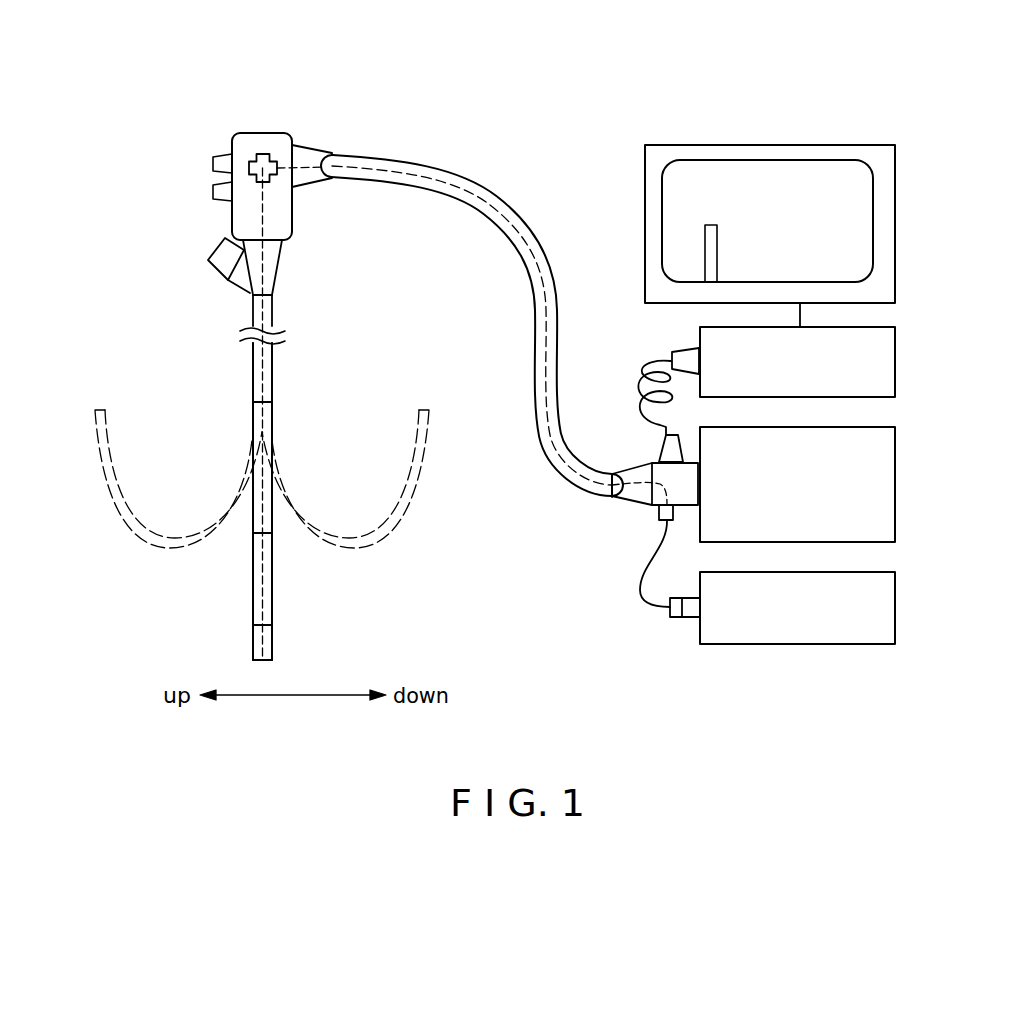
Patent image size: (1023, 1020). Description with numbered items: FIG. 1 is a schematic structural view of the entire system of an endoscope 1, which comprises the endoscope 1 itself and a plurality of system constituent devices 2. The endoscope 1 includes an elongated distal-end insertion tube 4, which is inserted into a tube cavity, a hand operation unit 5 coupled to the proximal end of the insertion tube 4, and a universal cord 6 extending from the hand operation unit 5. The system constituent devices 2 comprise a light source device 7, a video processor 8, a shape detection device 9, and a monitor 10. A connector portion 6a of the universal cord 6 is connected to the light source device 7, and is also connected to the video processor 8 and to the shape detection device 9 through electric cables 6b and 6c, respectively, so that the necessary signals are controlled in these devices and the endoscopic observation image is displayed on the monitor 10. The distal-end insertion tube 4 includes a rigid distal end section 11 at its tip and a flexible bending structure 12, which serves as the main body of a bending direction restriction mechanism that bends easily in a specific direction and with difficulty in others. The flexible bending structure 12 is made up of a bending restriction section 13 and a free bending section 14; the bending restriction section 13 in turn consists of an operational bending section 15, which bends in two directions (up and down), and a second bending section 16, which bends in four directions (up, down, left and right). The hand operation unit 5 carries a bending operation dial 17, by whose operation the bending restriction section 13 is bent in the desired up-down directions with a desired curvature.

The endoscope 1 is at (133, 279).
The system constituent devices 2 is at (955, 143).
The distal-end insertion tube 4 is at (93, 342).
The hand operation unit 5 is at (292, 215).
The universal cord 6 is at (421, 192).
The connector portion 6a is at (628, 503).
The electric cable 6b is at (637, 360).
The electric cable 6c is at (637, 599).
The light source device 7 is at (895, 487).
The video processor 8 is at (895, 363).
The shape detection device 9 is at (895, 607).
The monitor 10 is at (895, 228).
The distal end section 11 is at (272, 646).
The flexible bending structure 12 is at (305, 575).
The bending restriction section 13 is at (162, 555).
The free bending section 14 is at (273, 370).
The operational bending section 15 is at (250, 598).
The second bending section 16 is at (252, 536).
The bending operation dial 17 is at (263, 153).